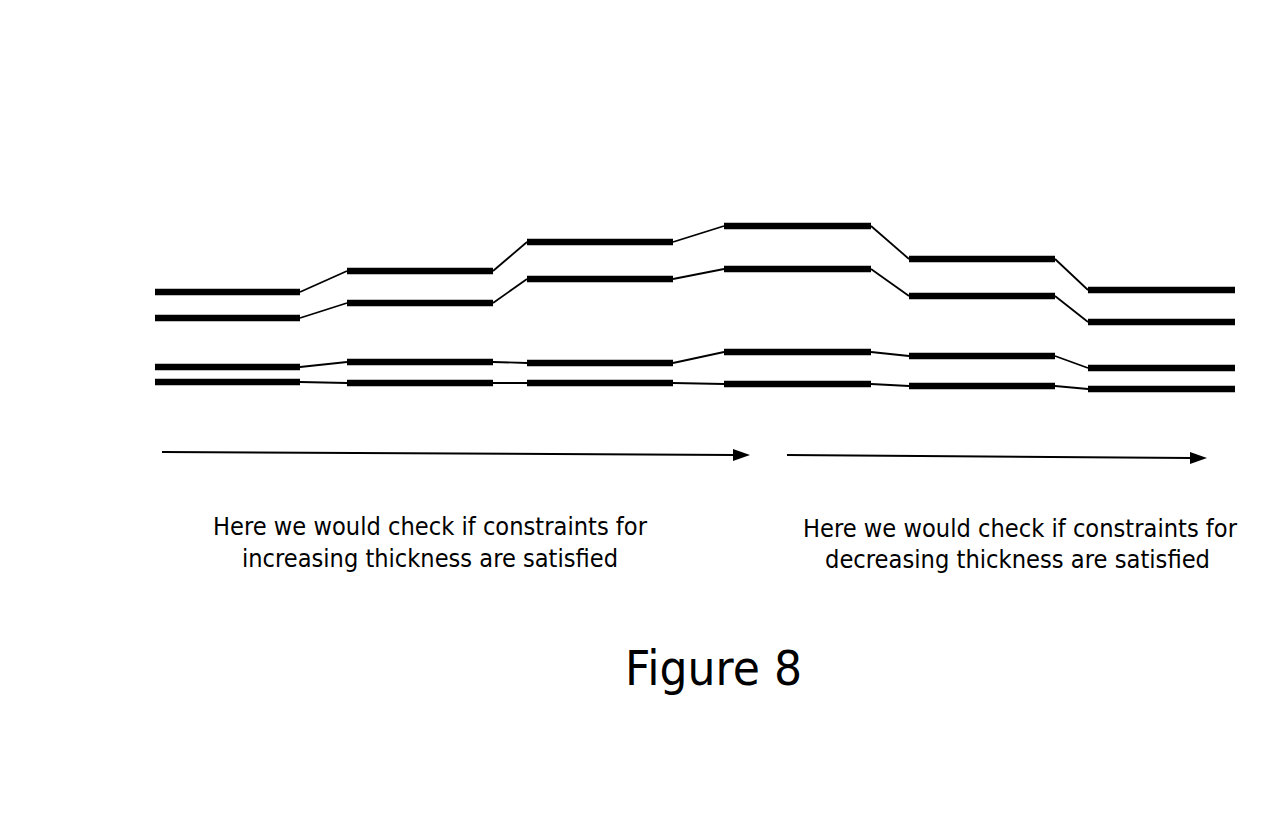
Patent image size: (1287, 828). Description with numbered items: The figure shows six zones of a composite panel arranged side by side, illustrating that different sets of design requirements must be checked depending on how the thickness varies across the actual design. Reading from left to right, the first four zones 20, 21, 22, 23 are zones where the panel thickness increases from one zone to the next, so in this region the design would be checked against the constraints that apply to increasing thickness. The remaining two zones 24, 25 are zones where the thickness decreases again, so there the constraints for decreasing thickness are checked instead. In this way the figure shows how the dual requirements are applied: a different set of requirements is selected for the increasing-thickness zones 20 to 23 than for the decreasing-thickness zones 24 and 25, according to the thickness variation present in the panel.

The zone 20 is at (232, 262).
The zone 21 is at (422, 237).
The zone 22 is at (594, 199).
The zone 23 is at (796, 175).
The zone 24 is at (981, 214).
The zone 25 is at (1163, 244).